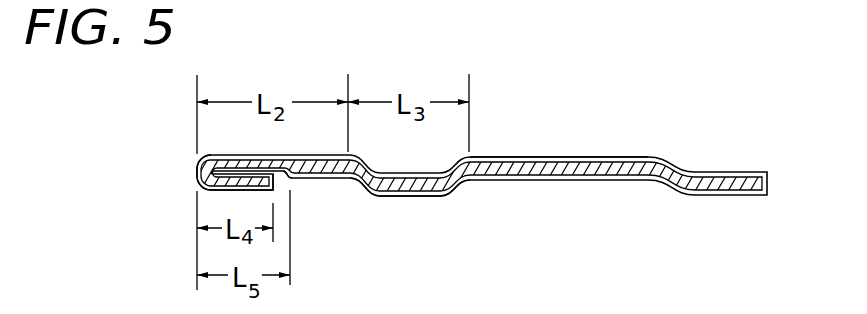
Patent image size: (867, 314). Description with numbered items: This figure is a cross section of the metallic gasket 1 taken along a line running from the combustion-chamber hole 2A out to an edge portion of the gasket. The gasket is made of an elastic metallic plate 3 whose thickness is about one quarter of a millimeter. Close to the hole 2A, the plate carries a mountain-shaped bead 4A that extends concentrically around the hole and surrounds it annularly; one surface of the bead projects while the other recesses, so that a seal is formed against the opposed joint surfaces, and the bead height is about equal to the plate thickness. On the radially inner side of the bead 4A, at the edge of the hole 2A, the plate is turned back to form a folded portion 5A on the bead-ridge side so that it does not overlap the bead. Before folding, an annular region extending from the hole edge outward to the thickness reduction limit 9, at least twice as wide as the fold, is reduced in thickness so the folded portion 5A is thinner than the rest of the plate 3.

The metallic gasket 1 is at (706, 157).
The hole for combustion chamber 2A is at (198, 172).
The elastic metallic plate 3 is at (597, 159).
The bead 4A is at (405, 196).
The folded portion 5A is at (227, 192).
The thickness reduction limit 9 is at (288, 187).